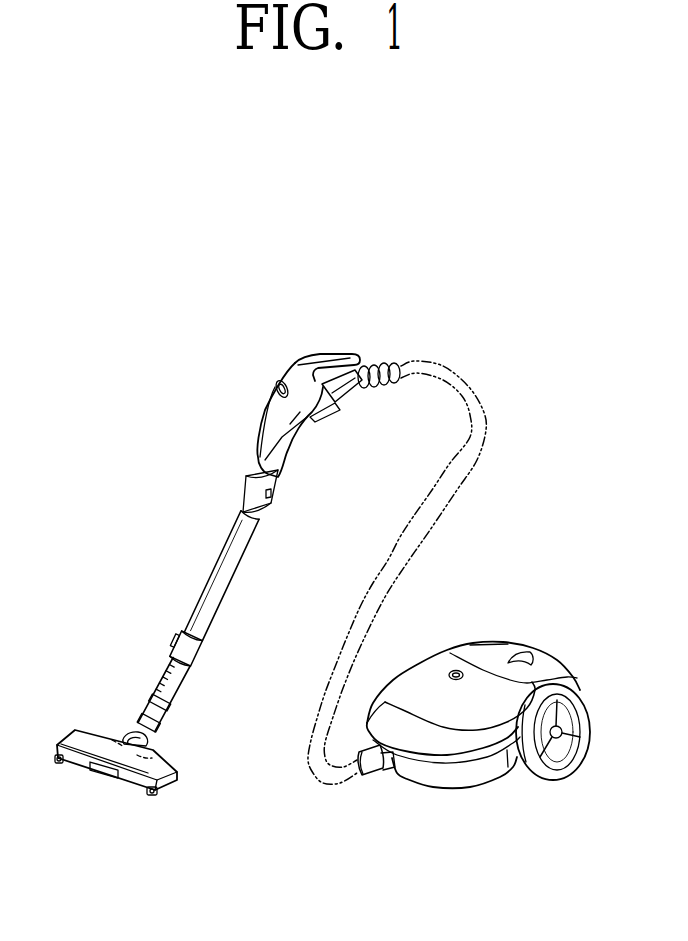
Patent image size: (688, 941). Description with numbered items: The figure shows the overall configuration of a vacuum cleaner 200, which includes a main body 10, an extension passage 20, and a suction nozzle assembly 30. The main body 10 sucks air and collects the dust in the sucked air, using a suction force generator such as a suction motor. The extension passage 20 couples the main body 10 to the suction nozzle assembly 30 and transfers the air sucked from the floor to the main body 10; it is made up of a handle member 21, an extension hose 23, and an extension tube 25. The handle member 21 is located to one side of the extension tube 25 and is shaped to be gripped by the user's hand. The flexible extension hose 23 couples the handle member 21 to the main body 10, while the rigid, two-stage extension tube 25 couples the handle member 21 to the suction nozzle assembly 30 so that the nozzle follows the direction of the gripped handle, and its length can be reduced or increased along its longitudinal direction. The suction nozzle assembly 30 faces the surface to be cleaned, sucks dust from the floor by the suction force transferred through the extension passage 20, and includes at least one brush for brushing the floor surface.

The vacuum cleaner 200 is at (306, 266).
The main body 10 is at (521, 644).
The extension passage 20 is at (317, 793).
The handle member 21 is at (331, 352).
The extension hose 23 is at (486, 424).
The extension tube 25 is at (168, 662).
The suction nozzle assembly 30 is at (63, 731).